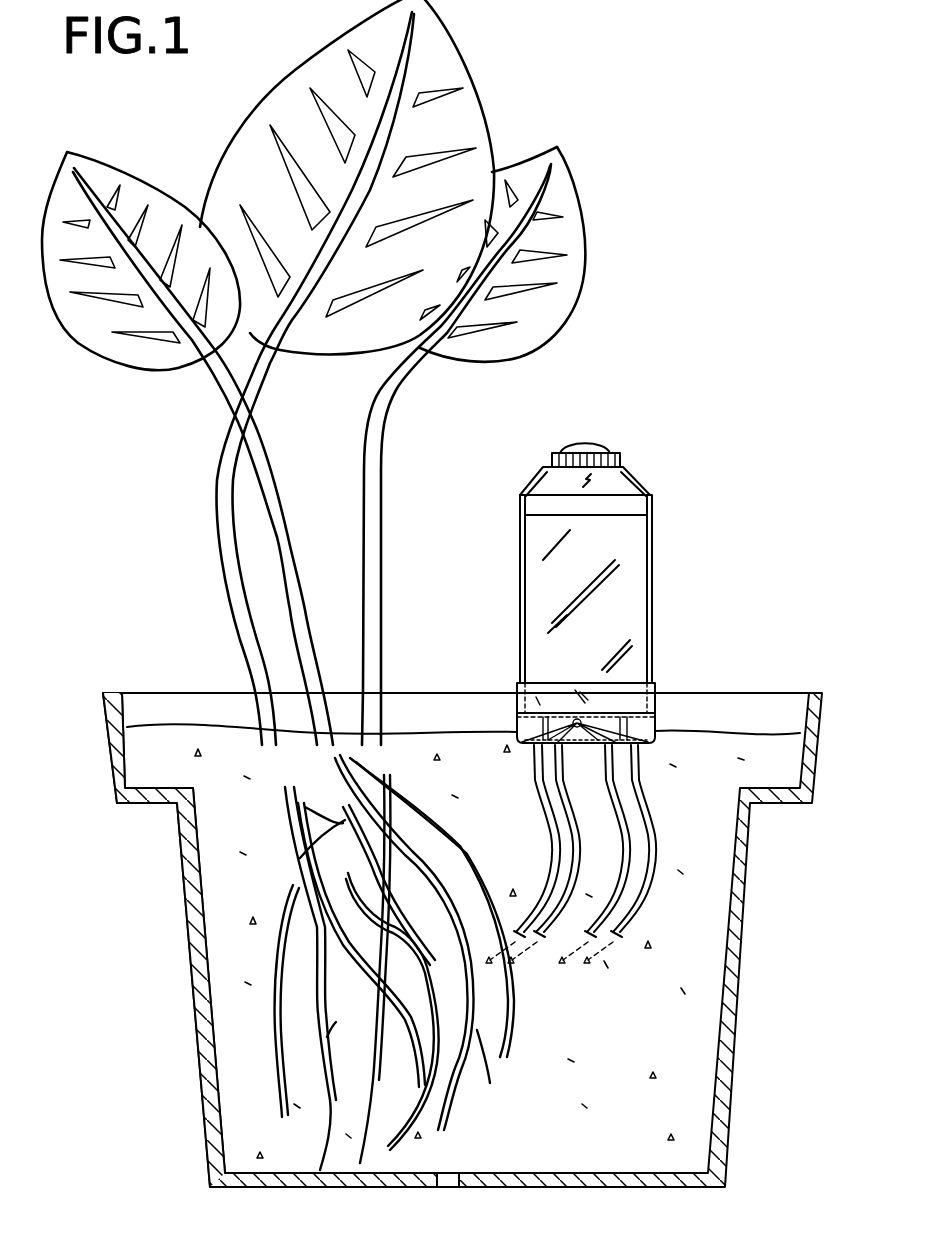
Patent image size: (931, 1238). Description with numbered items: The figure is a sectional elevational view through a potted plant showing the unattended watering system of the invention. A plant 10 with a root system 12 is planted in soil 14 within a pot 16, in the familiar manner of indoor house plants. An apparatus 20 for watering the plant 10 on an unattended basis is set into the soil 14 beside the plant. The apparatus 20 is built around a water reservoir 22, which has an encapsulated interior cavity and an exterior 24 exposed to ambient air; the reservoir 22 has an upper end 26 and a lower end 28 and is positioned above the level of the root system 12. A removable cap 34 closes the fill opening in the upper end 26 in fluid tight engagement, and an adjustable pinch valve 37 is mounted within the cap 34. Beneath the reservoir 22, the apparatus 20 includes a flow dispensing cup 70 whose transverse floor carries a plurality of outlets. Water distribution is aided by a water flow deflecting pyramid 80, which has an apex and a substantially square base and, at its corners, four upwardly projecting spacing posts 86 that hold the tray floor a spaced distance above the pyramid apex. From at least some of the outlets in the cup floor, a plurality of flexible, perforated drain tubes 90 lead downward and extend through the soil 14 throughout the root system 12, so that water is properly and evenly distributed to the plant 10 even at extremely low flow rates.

The plant 10 is at (603, 127).
The root system 12 is at (266, 884).
The soil 14 is at (683, 1053).
The pot 16 is at (745, 918).
The apparatus 20 is at (696, 550).
The water reservoir 22 is at (655, 606).
The exterior 24 is at (537, 538).
The upper end 26 is at (623, 482).
The lower end 28 is at (640, 675).
The cap 34 is at (547, 456).
The adjustable pinch valve 37 is at (585, 438).
The flow dispensing cup 70 is at (660, 725).
The water flow deflecting pyramid 80 is at (515, 692).
The spacing posts 86 is at (660, 738).
The flexible, perforated drain tubes 90 is at (560, 838).